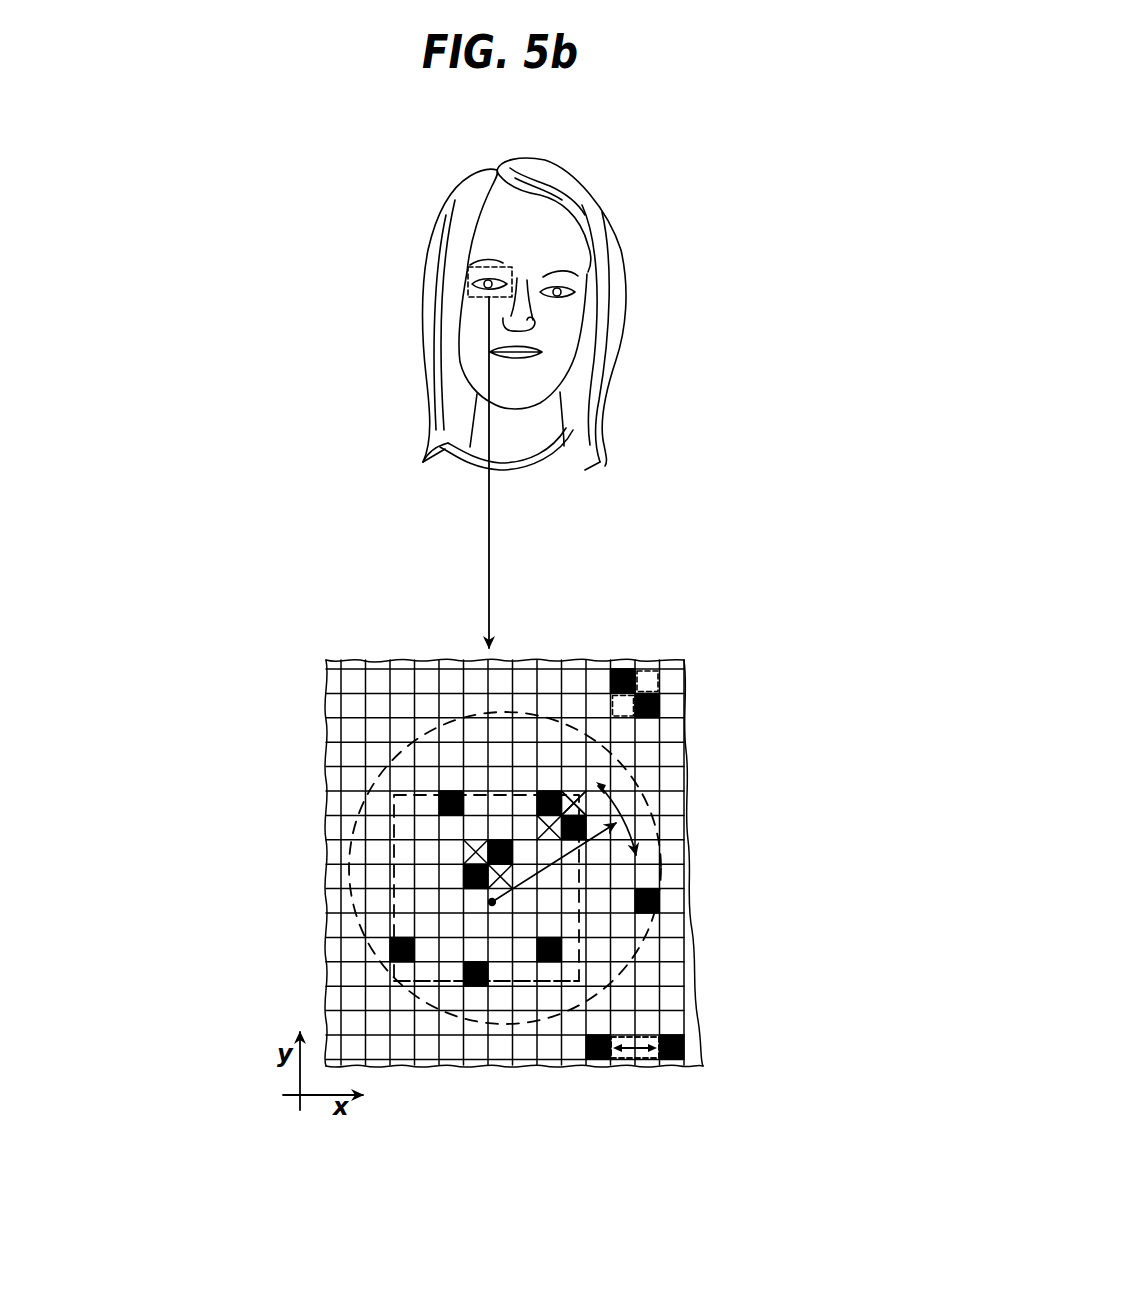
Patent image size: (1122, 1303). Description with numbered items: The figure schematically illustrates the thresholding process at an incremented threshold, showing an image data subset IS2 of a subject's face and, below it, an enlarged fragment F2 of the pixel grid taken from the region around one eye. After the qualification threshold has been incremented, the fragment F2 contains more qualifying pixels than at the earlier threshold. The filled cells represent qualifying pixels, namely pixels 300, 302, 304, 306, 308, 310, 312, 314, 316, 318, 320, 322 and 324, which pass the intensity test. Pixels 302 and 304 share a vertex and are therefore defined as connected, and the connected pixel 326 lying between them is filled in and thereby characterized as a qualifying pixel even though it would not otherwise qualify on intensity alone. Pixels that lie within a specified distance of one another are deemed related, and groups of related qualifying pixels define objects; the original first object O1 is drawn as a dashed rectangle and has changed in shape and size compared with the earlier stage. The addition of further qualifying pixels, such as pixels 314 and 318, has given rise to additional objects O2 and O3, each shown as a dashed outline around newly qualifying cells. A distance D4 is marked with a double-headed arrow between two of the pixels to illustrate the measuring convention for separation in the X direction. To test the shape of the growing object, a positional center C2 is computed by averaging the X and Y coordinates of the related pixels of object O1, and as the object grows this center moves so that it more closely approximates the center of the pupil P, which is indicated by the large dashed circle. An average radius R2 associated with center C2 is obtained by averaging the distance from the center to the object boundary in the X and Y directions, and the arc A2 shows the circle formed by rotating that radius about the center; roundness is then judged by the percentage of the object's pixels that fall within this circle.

The pixel 300 is at (660, 708).
The pixel 302 is at (549, 791).
The pixel 304 is at (570, 840).
The pixel 306 is at (675, 1060).
The pixel 308 is at (472, 986).
The pixel 310 is at (463, 880).
The pixel 312 is at (660, 903).
The pixel 314 is at (598, 1036).
The pixel 316 is at (548, 962).
The pixel 318 is at (611, 684).
The pixel 320 is at (390, 950).
The pixel 322 is at (500, 843).
The pixel 324 is at (448, 792).
The connected pixel 326 is at (578, 800).
The image data subset IS2 is at (668, 250).
The fragment F2 is at (622, 648).
The object O3 is at (648, 672).
The first object O1 is at (580, 928).
The object O2 is at (645, 1060).
The average radius R2 is at (527, 868).
The arc A2 is at (622, 820).
The positional center C2 is at (492, 906).
The distance D4 is at (630, 1052).
The pupil P is at (356, 923).